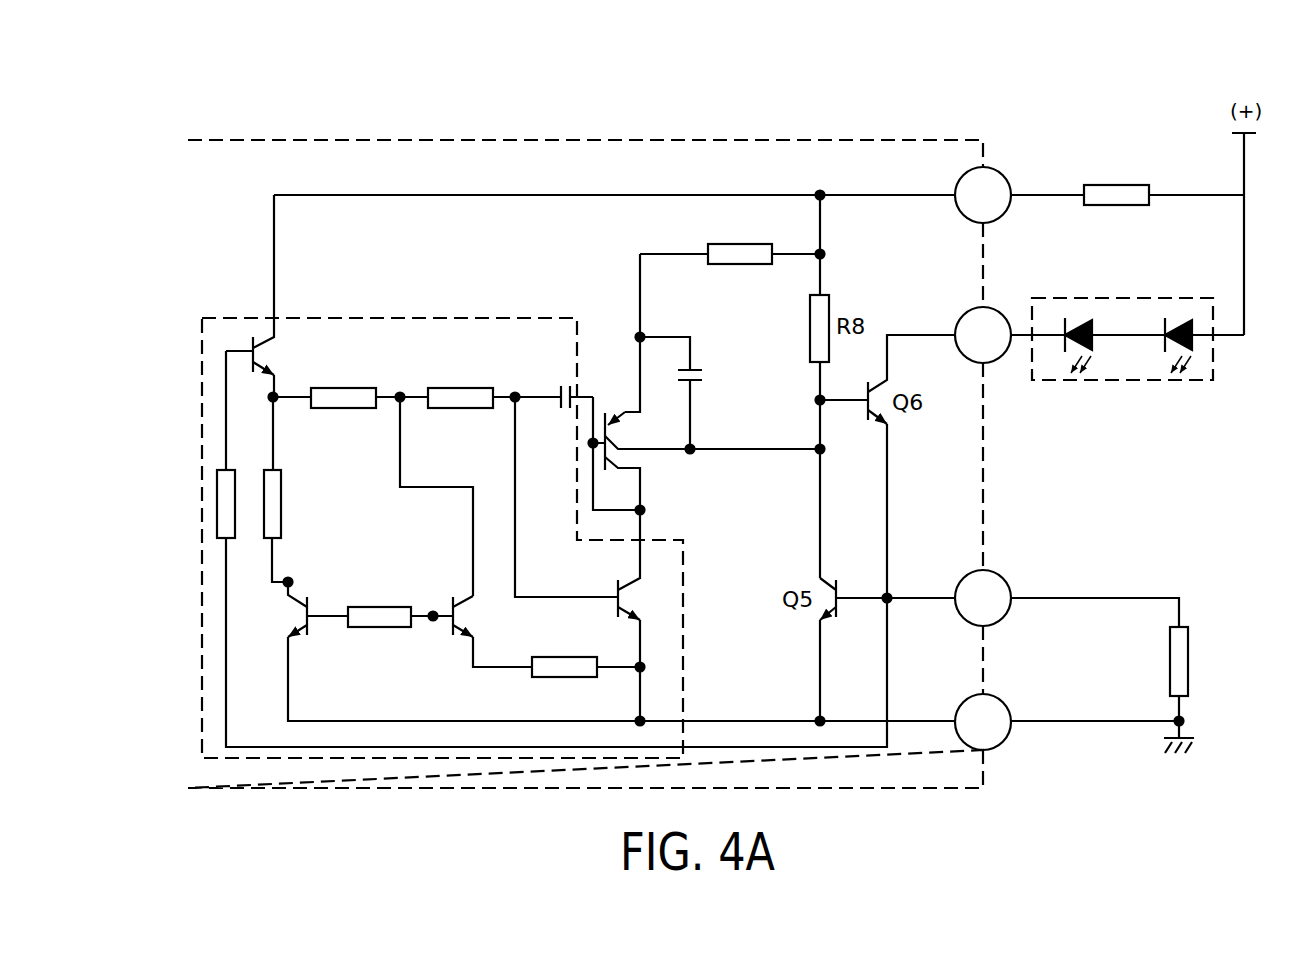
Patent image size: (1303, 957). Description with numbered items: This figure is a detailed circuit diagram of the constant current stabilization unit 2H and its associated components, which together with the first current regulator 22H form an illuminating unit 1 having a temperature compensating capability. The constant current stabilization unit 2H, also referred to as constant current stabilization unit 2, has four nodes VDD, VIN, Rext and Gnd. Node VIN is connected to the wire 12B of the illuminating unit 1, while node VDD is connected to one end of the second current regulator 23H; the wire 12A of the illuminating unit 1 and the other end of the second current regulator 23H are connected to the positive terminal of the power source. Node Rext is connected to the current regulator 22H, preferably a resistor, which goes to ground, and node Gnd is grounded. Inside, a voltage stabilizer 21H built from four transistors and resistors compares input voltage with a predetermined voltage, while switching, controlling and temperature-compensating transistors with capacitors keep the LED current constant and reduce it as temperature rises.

The constant current stabilization unit 2H is at (436, 152).
The constant current stabilization unit 2 is at (995, 146).
The voltage stabilizer 21H is at (221, 320).
The second current regulator 23H is at (1111, 190).
The first current regulator 22H is at (1125, 675).
The wire 12B is at (1046, 335).
The wire 12A is at (1218, 337).
The illuminating unit 1 is at (1190, 380).